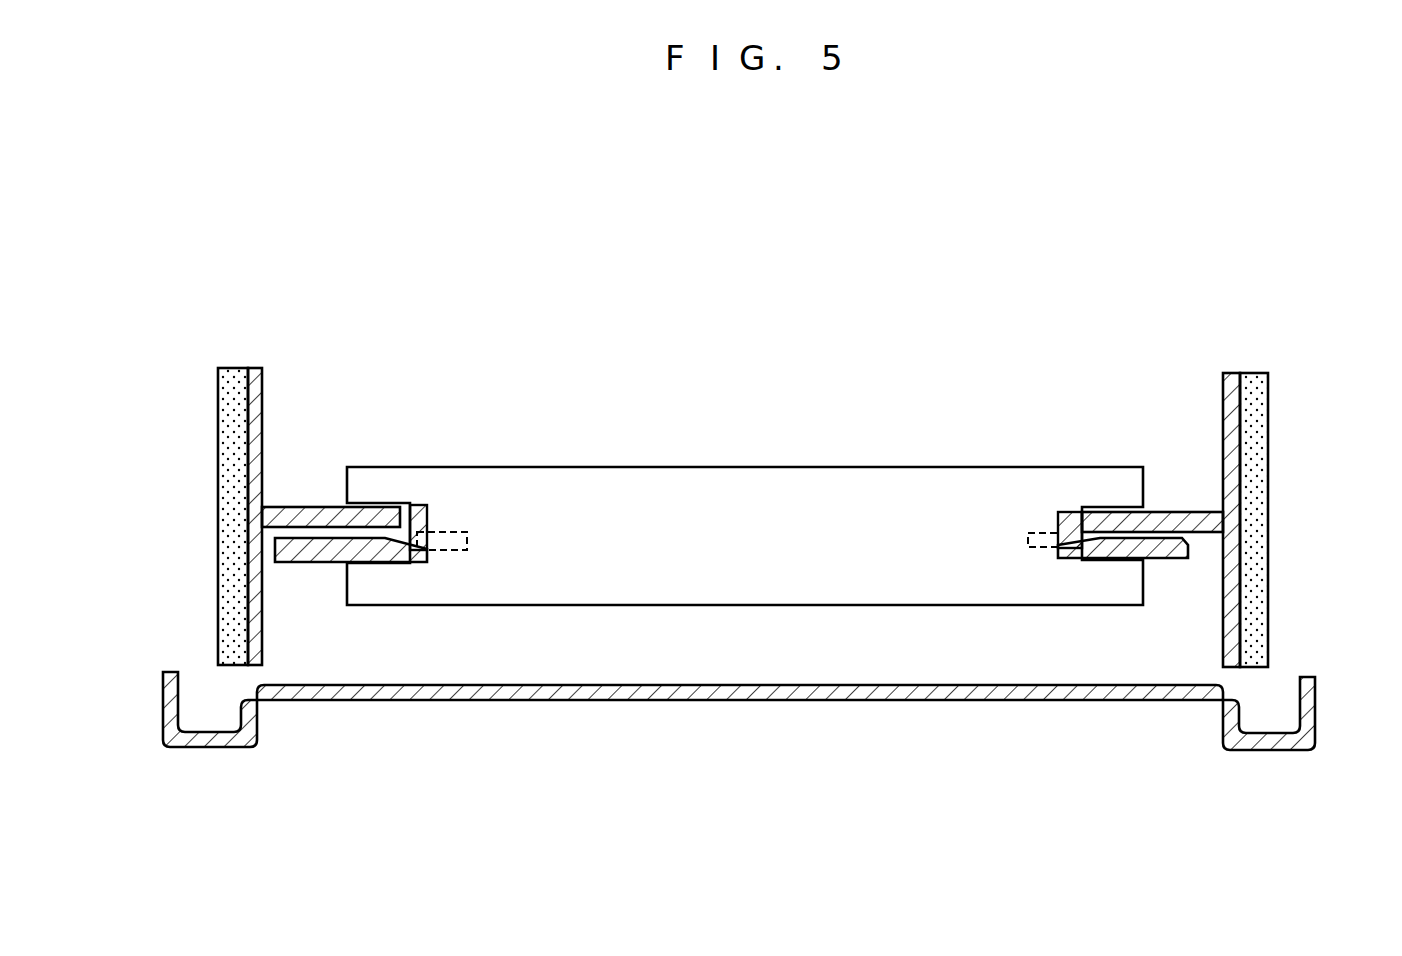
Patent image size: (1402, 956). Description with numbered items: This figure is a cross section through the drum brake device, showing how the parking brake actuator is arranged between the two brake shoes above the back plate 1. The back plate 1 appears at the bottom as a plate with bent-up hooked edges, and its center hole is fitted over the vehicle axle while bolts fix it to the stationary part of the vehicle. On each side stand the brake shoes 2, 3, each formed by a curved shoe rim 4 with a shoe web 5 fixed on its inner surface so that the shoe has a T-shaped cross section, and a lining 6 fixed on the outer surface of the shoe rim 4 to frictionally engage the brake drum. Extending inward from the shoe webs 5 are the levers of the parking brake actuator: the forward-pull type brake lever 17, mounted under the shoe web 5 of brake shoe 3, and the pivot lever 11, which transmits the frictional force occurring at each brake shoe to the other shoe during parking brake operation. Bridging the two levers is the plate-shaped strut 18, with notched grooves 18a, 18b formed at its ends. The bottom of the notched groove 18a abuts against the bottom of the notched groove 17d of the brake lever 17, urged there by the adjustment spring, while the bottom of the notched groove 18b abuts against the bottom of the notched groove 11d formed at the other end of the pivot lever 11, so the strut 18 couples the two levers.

The back plate 1 is at (764, 712).
The brake shoe 2 is at (758, 539).
The brake shoe 3 is at (653, 577).
The shoe rim 4 is at (258, 367).
The shoe web 5 is at (290, 507).
The lining 6 is at (220, 400).
The pivot lever 11 is at (1100, 672).
The notched groove 11d is at (1058, 541).
The brake lever 17 is at (378, 670).
The notched groove 17d is at (425, 542).
The strut 18 is at (745, 479).
The notched groove 18a is at (410, 505).
The notched groove 18b is at (1078, 508).